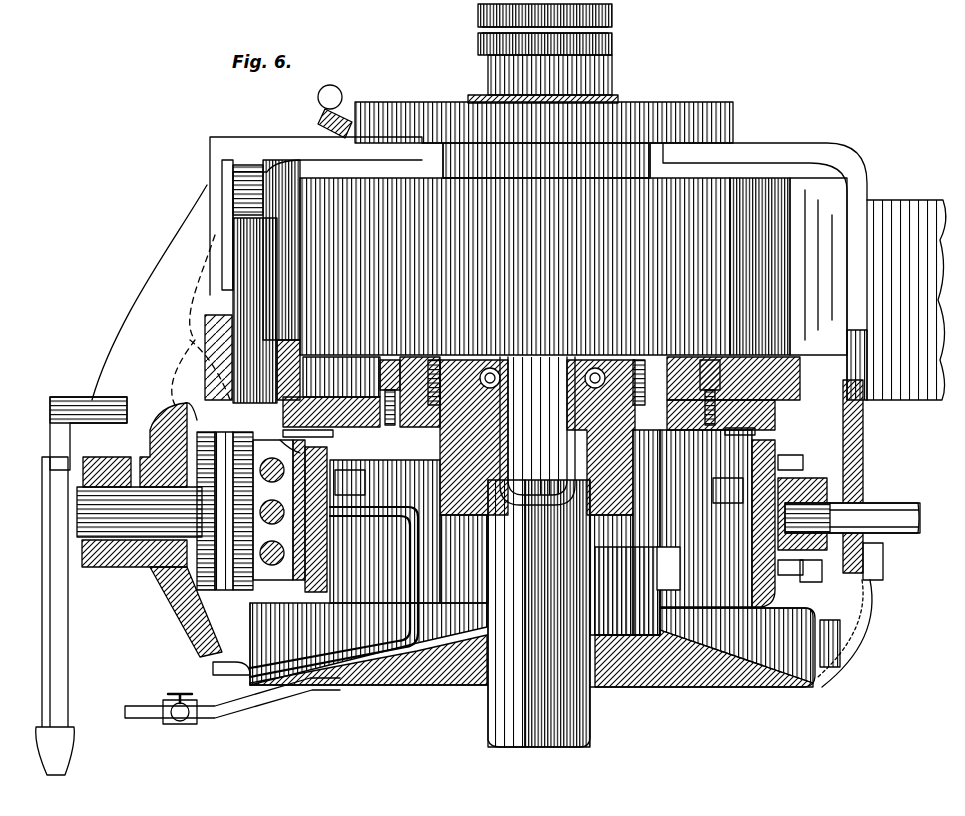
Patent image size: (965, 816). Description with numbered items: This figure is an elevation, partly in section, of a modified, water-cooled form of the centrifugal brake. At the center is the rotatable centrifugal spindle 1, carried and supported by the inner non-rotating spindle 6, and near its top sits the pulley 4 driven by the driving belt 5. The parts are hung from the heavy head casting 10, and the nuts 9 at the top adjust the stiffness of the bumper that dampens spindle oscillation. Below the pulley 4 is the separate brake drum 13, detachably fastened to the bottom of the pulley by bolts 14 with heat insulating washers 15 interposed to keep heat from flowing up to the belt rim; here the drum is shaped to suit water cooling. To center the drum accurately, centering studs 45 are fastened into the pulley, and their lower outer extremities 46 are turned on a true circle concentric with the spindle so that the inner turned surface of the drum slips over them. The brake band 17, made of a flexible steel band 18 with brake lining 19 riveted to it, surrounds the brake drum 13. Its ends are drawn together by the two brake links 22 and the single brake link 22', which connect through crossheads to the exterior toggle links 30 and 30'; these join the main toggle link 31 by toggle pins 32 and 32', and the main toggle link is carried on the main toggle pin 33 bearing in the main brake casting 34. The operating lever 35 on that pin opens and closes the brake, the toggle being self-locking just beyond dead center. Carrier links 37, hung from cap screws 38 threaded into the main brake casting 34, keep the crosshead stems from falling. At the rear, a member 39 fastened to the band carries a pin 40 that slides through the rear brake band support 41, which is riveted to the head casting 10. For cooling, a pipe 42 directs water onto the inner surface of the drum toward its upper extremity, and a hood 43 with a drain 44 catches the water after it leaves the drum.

The rotatable centrifugal spindle 1 is at (530, 598).
The pulley 4 is at (808, 421).
The driving belt 5 is at (905, 213).
The inner non-rotating spindle 6 is at (537, 431).
The nuts 9 is at (614, 40).
The head casting 10 is at (447, 112).
The brake drum 13 is at (757, 548).
The bolts 14 is at (365, 490).
The heat insulating washers 15 is at (330, 433).
The brake band 17 is at (283, 440).
The flexible steel band 18 is at (825, 585).
The brake lining 19 is at (790, 597).
The brake links 22 is at (204, 375).
The brake link 22' is at (188, 596).
The exterior toggle link 30 is at (168, 385).
The exterior toggle link 30' is at (157, 635).
The main toggle link 31 is at (222, 432).
The toggle pin 32 is at (135, 431).
The toggle pin 32' is at (152, 668).
The main toggle pin 33 is at (125, 542).
The main brake casting 34 is at (253, 140).
The operating lever 35 is at (48, 641).
The carrier links 37 is at (225, 250).
The cap screws 38 is at (215, 192).
The rear support member 39 is at (822, 483).
The pin 40 is at (885, 503).
The rear brake band support 41 is at (866, 470).
The pipe 42 is at (278, 700).
The hood 43 is at (342, 670).
The drain 44 is at (210, 668).
The centering studs 45 is at (547, 392).
The lower outer extremities of centering studs 46 is at (430, 430).